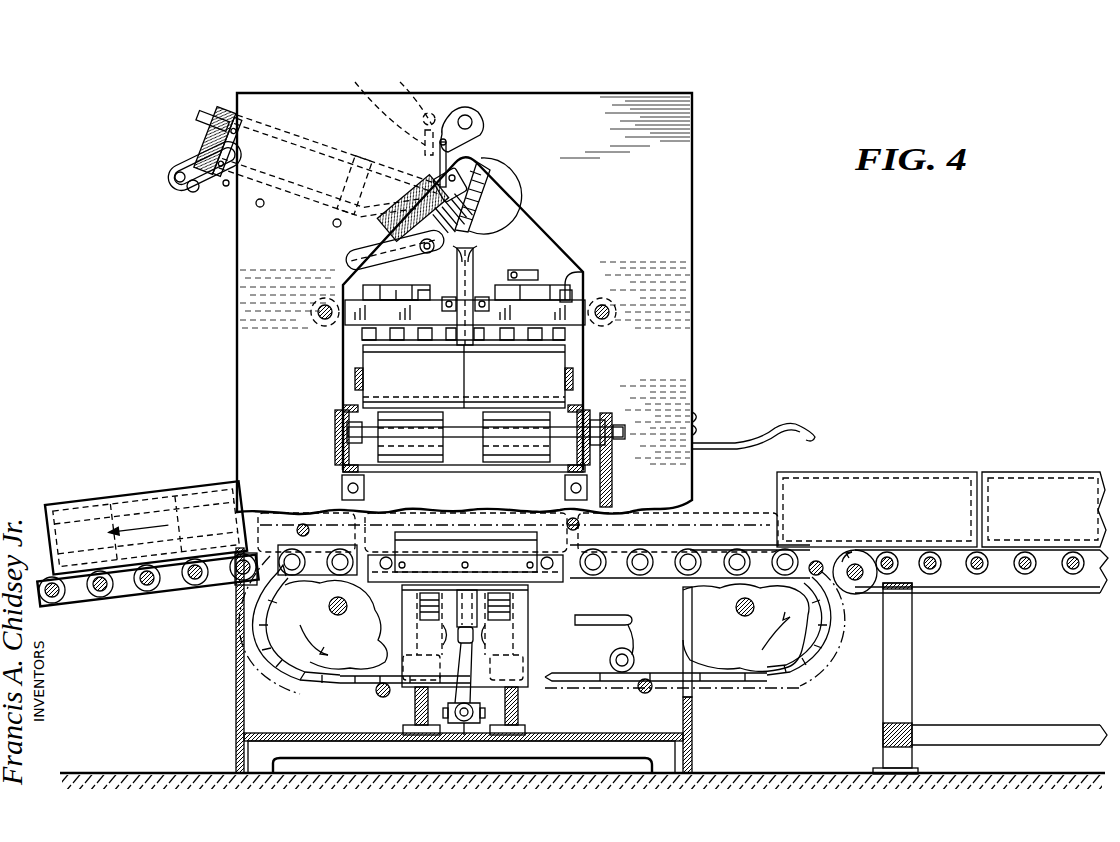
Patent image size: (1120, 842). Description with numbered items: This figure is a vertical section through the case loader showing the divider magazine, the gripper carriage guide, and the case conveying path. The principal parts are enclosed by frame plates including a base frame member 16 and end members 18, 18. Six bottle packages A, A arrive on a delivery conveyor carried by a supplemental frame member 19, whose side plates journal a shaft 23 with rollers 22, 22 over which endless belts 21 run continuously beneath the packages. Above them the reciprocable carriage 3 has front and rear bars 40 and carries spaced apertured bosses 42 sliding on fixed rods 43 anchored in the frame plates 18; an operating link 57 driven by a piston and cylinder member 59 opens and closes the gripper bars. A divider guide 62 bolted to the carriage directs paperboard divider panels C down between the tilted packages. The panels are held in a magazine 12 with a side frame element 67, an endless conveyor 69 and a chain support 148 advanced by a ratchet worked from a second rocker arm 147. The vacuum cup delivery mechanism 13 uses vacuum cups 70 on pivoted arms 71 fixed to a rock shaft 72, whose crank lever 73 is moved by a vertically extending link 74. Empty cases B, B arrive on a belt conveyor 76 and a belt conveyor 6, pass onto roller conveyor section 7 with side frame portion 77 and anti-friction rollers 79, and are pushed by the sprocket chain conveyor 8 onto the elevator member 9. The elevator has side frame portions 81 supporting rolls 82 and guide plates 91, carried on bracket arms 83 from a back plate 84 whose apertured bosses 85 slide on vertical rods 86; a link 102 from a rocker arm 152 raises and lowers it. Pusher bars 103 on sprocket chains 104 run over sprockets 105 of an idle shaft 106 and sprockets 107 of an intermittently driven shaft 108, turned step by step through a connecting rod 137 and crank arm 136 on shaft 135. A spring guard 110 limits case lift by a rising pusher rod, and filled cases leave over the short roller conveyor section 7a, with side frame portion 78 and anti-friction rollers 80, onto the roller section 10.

The reciprocable carriage 3 is at (525, 265).
The belt conveyor 6 is at (1000, 597).
The roller conveyor section 7 is at (670, 583).
The short roller conveyor section 7a is at (305, 568).
The sprocket chain conveyor 8 is at (720, 700).
The elevator member 9 is at (535, 585).
The roller section 10 is at (115, 610).
The magazine 12 is at (204, 105).
The vacuum cup delivery mechanism 13 is at (484, 197).
The base frame member 16 is at (240, 718).
The end members 18 is at (690, 176).
The supplemental frame member 19 is at (343, 410).
The endless belts 21 is at (418, 462).
The rollers 22 is at (464, 437).
The shaft 23 is at (560, 428).
The front and rear bars 40 is at (560, 302).
The apertured bosses 42 is at (612, 305).
The rods 43 is at (318, 316).
The operating link 57 is at (420, 283).
The piston and cylinder member 59 is at (572, 283).
The divider guide 62 is at (482, 258).
The side frame element 67 is at (229, 192).
The endless conveyor 69 is at (196, 196).
The vacuum cups 70 is at (472, 210).
The pivoted arms 71 is at (490, 168).
The rock shaft 72 is at (478, 108).
The crank lever 73 is at (410, 94).
The link 74 is at (381, 104).
The belt conveyor 76 is at (943, 598).
The side frame portion 77 is at (720, 560).
The side frame portion 78 is at (377, 545).
The anti-friction rollers 79 is at (682, 560).
The anti-friction rollers 80 is at (325, 545).
The side frame portions 81 is at (382, 585).
The rolls 82 is at (555, 578).
The bracket arms 83 is at (480, 612).
The back plate 84 is at (480, 636).
The apertured bosses 85 is at (518, 682).
The vertical rods 86 is at (525, 715).
The guide plates 91 is at (466, 552).
The link 102 is at (445, 678).
The pusher bars 103 is at (303, 522).
The sprocket chains 104 is at (770, 680).
The sprockets 105 is at (785, 665).
The idle shaft 106 is at (745, 617).
The sprockets 107 is at (320, 680).
The intermittently driven shaft 108 is at (328, 606).
The spring guard 110 is at (758, 425).
The shaft 135 is at (618, 672).
The crank arm 136 is at (610, 650).
The connecting rod 137 is at (610, 615).
The second rocker arm 147 is at (432, 118).
The chain support 148 is at (465, 150).
The rocker arm 152 is at (457, 752).
The six bottle packages A is at (385, 365).
The cases B is at (875, 470).
The paperboard divider panels C is at (190, 158).